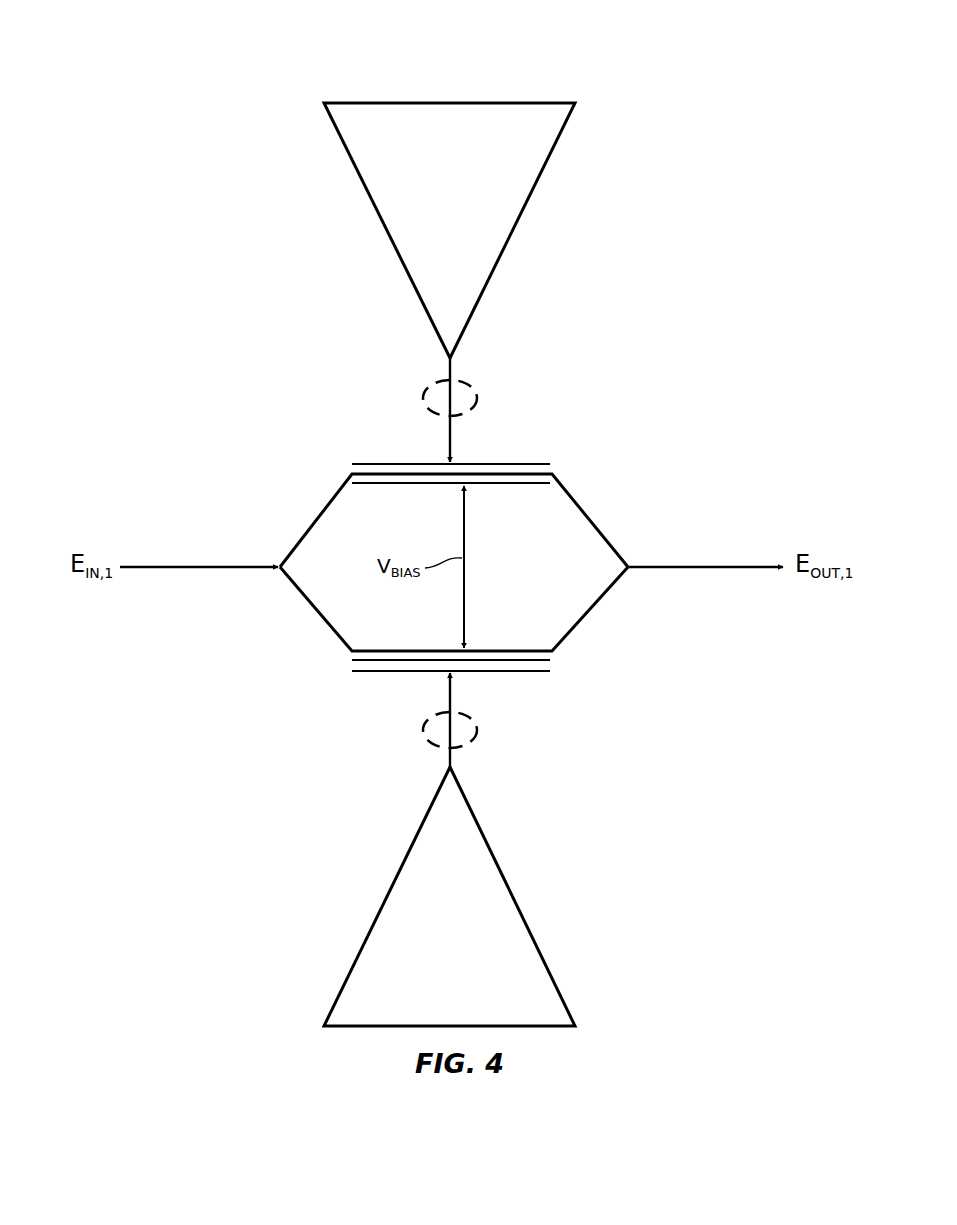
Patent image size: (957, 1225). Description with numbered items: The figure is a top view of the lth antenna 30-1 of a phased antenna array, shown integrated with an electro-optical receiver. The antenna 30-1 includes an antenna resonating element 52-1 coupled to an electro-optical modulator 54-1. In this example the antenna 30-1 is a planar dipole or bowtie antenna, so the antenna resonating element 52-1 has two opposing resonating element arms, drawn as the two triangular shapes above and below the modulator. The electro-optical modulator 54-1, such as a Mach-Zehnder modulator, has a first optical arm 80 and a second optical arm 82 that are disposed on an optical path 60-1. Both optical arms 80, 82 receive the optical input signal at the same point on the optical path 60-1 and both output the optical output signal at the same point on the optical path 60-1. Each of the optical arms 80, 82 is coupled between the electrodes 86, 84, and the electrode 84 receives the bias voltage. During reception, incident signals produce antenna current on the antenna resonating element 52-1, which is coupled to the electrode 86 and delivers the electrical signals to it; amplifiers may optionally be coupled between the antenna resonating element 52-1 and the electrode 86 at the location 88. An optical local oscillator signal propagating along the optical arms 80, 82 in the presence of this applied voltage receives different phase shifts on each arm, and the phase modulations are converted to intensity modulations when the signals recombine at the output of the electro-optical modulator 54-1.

The antenna 30-1 is at (748, 52).
The antenna resonating element 52-1 is at (538, 153).
The electro-optical modulator 54-1 is at (652, 378).
The optical path 60-1 is at (187, 560).
The optical arm 80 is at (504, 504).
The optical arm 82 is at (504, 631).
The electrode 84 is at (368, 485).
The electrode 86 is at (385, 462).
The location 88 is at (477, 390).